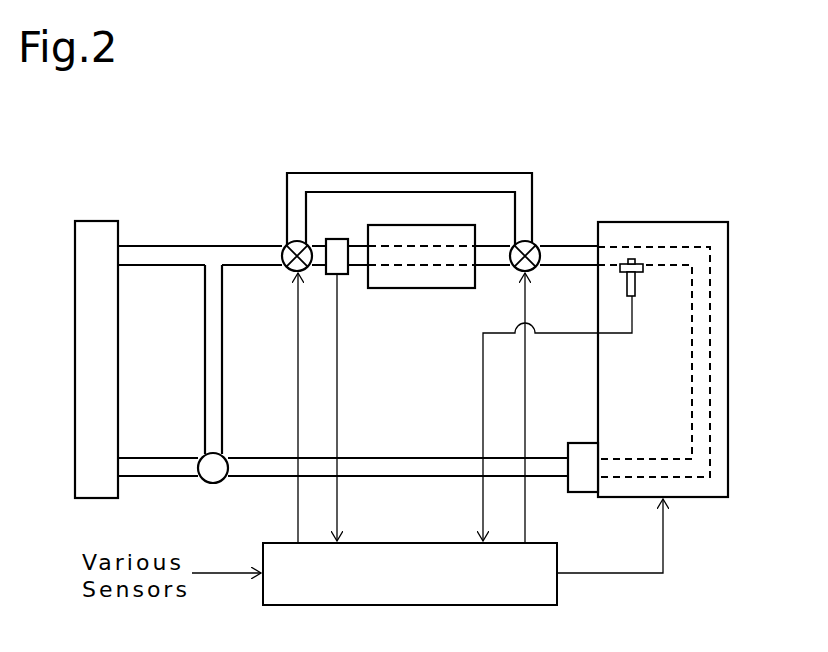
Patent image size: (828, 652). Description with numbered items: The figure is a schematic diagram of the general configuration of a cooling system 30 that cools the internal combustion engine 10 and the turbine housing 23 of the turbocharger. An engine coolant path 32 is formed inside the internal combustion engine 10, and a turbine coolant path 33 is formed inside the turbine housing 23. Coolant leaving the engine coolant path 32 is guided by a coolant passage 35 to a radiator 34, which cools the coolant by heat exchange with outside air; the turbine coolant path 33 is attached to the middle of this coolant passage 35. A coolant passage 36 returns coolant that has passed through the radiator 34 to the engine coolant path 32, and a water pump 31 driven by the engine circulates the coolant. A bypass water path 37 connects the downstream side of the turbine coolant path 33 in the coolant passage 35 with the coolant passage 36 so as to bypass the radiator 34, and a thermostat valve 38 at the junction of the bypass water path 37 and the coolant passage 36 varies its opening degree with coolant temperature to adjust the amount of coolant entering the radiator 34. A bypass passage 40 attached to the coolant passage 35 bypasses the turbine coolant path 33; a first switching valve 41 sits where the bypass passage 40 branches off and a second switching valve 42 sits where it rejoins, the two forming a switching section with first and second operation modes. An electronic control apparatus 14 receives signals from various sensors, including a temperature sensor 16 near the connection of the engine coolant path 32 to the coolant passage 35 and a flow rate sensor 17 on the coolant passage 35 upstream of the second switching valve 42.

The internal combustion engine 10 is at (664, 222).
The electronic control apparatus 14 is at (408, 543).
The temperature sensor 16 is at (643, 268).
The flow rate sensor 17 is at (337, 239).
The turbine housing 23 is at (420, 225).
The cooling system 30 is at (237, 156).
The water pump 31 is at (575, 443).
The engine coolant path 32 is at (692, 354).
The turbine coolant path 33 is at (432, 267).
The radiator 34 is at (98, 221).
The coolant passage 35 is at (176, 246).
The coolant passage 36 is at (148, 458).
The bypass water path 37 is at (222, 363).
The thermostat valve 38 is at (215, 483).
The bypass passage 40 is at (347, 173).
The first switching valve 41 is at (532, 268).
The second switching valve 42 is at (290, 267).